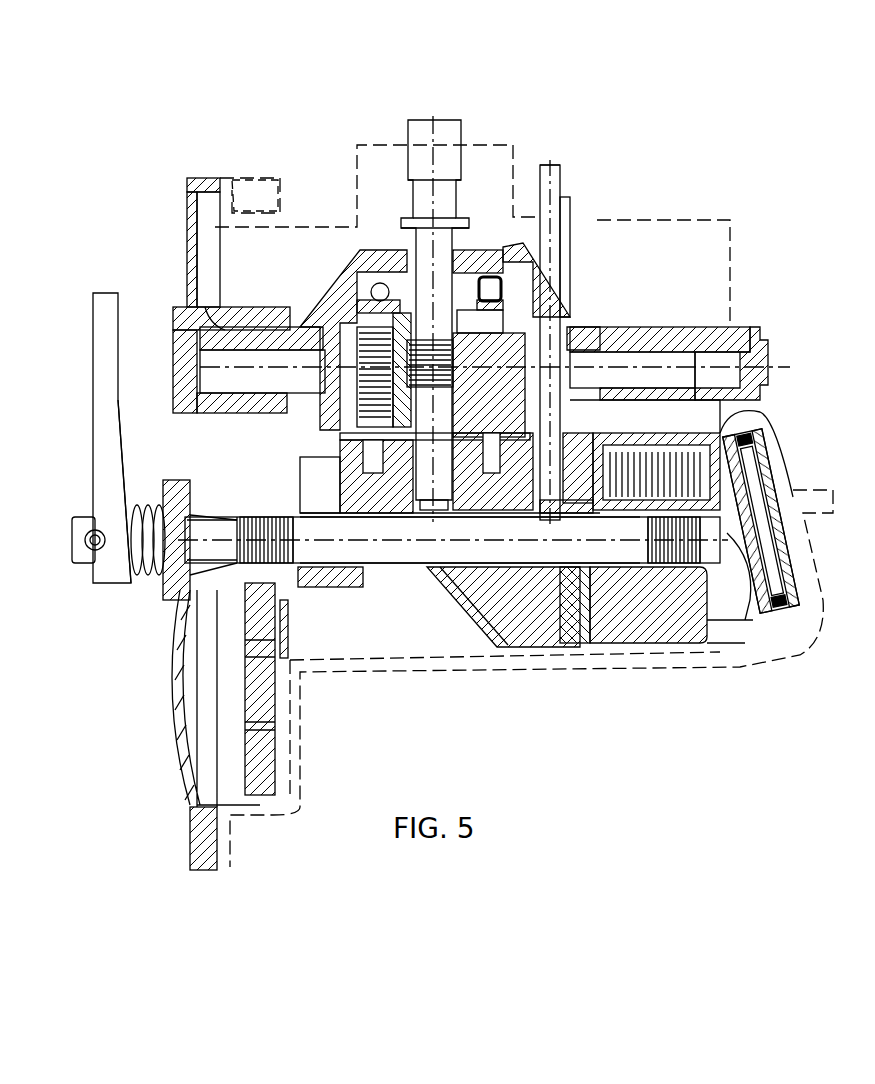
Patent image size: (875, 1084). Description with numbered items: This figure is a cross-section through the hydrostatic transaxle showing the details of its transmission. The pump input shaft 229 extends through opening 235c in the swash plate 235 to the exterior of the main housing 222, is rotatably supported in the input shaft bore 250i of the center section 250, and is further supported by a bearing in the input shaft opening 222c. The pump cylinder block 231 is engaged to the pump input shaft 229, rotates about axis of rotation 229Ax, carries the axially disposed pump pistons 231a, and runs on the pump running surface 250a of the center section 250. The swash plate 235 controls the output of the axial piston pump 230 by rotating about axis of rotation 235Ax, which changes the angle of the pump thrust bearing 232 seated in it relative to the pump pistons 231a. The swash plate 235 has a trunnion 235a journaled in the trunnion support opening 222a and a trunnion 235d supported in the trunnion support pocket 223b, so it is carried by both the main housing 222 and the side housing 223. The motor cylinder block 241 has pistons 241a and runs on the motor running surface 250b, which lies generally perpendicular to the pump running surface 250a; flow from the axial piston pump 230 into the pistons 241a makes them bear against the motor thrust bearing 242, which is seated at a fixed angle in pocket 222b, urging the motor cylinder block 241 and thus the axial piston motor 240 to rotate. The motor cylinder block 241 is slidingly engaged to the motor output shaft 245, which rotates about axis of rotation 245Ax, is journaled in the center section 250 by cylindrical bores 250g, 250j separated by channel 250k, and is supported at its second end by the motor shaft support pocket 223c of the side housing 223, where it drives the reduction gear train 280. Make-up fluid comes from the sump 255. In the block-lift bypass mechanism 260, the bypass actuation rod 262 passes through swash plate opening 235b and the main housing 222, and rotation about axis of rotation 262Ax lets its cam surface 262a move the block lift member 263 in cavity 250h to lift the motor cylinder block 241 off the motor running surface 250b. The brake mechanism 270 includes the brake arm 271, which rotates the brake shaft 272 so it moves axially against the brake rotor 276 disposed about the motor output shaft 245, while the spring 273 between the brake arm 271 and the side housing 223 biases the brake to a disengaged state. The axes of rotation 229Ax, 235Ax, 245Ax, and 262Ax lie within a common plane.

The main housing 222 is at (420, 672).
The trunnion support opening 222a is at (715, 352).
The pocket 222b is at (747, 578).
The input shaft opening 222c is at (378, 175).
The side housing 223 is at (187, 252).
The trunnion support pocket 223b is at (226, 335).
The motor shaft support pocket 223c is at (178, 560).
The pump input shaft 229 is at (462, 138).
The axis of rotation 229Ax is at (430, 137).
The axial piston pump 230 is at (345, 320).
The pump cylinder block 231 is at (508, 393).
The pump pistons 231a is at (355, 378).
The pump thrust bearing 232 is at (488, 289).
The swash plate 235 is at (360, 260).
The trunnion 235a is at (745, 372).
The swash plate opening 235b is at (548, 310).
The opening 235c is at (410, 265).
The trunnion 235d is at (215, 341).
The axis of rotation 235Ax is at (652, 362).
The axial piston motor 240 is at (727, 685).
The motor cylinder block 241 is at (655, 620).
The pistons 241a is at (720, 430).
The motor thrust bearing 242 is at (762, 447).
The motor output shaft 245 is at (405, 559).
The axis of rotation 245Ax is at (413, 545).
The center section 250 is at (340, 482).
The pump running surface 250a is at (320, 432).
The motor running surface 250b is at (607, 640).
The cylindrical bore 250g is at (522, 563).
The cavity 250h is at (588, 470).
The input shaft bore 250i is at (425, 508).
The cylindrical bore 250j is at (320, 560).
The channel 250k is at (485, 523).
The sump 255 is at (431, 644).
The block-lift bypass mechanism 260 is at (573, 160).
The bypass actuation rod 262 is at (561, 183).
The bypass rod cam surface 262a is at (560, 512).
The axis of rotation 262Ax is at (565, 207).
The block lift member 263 is at (576, 514).
The brake mechanism 270 is at (66, 491).
The brake arm 271 is at (93, 322).
The brake shaft 272 is at (70, 552).
The spring 273 is at (150, 505).
The brake rotor 276 is at (288, 640).
The reduction gear train 280 is at (232, 692).